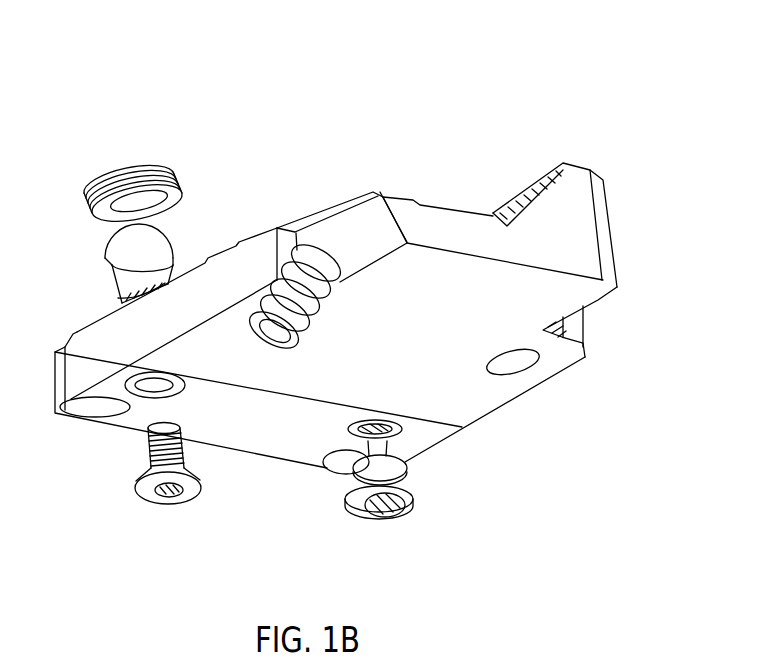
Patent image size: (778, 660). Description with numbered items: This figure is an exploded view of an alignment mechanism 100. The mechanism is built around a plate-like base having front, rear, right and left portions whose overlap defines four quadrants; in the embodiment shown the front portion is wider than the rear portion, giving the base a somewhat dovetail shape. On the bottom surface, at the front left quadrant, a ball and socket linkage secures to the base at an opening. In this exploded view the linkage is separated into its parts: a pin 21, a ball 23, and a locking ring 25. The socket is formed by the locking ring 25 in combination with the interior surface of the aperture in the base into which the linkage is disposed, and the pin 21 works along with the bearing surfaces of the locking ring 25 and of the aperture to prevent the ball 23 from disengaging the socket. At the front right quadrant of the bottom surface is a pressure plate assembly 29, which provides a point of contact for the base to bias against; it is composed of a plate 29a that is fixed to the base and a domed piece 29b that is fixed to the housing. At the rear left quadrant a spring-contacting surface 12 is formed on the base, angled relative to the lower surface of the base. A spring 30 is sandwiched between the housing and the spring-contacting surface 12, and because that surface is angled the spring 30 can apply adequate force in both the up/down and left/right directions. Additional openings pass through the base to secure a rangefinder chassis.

The alignment mechanism 100 is at (449, 122).
The spring-contacting surface 12 is at (348, 237).
The pin 21 is at (192, 495).
The ball 23 is at (155, 257).
The locking ring 25 is at (183, 177).
The pressure plate assembly 29 is at (451, 481).
The plate 29a is at (387, 470).
The domed piece 29b is at (417, 503).
The spring 30 is at (302, 343).